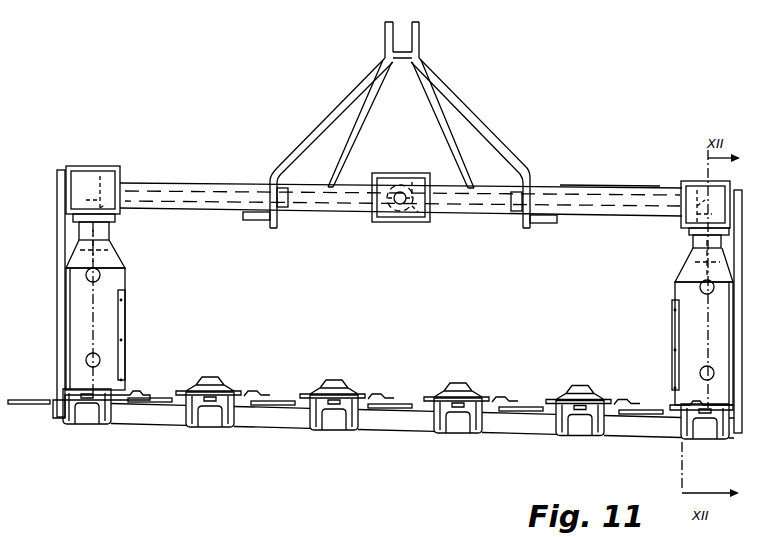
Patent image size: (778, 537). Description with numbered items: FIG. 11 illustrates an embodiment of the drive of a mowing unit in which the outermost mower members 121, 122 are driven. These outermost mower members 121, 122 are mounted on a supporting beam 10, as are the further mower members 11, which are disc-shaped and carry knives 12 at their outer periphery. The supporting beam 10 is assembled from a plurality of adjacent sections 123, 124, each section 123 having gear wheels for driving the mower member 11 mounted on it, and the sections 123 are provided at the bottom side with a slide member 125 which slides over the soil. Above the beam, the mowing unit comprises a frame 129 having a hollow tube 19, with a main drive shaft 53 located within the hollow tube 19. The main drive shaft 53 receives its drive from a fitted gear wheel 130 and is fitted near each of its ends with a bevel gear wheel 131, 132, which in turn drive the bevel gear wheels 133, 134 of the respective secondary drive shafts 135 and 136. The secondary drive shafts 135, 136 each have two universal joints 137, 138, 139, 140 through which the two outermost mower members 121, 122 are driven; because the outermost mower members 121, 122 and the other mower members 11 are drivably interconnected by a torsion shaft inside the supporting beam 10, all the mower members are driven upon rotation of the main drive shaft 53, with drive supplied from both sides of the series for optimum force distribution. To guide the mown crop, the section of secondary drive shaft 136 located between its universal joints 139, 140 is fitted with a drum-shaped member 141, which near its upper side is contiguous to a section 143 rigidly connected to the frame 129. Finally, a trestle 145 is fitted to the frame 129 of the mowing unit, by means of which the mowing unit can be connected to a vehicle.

The supporting beam 10 is at (153, 433).
The mower members 11 is at (227, 380).
The knives 12 is at (22, 403).
The hollow tube 19 is at (560, 185).
The main drive shaft 53 is at (190, 185).
The outermost mower member 121 is at (137, 391).
The outermost mower member 122 is at (688, 405).
The section 123 is at (100, 407).
The section 124 is at (410, 422).
The slide member 125 is at (212, 425).
The frame 129 is at (57, 288).
The gear wheel 130 is at (405, 222).
The bevel gear wheel 131 is at (104, 163).
The bevel gear wheel 132 is at (700, 180).
The bevel gear wheel 133 is at (57, 206).
The bevel gear wheel 134 is at (666, 228).
The secondary drive shaft 135 is at (112, 250).
The secondary drive shaft 136 is at (700, 267).
The universal joint 137 is at (125, 276).
The universal joint 138 is at (100, 353).
The universal joint 139 is at (678, 291).
The universal joint 140 is at (700, 368).
The drum-shaped member 141 is at (112, 323).
The section 143 is at (95, 253).
The trestle 145 is at (335, 112).